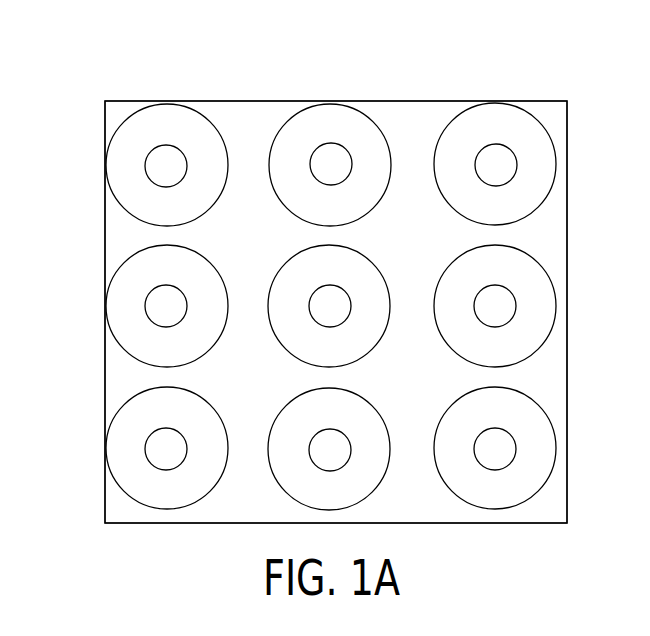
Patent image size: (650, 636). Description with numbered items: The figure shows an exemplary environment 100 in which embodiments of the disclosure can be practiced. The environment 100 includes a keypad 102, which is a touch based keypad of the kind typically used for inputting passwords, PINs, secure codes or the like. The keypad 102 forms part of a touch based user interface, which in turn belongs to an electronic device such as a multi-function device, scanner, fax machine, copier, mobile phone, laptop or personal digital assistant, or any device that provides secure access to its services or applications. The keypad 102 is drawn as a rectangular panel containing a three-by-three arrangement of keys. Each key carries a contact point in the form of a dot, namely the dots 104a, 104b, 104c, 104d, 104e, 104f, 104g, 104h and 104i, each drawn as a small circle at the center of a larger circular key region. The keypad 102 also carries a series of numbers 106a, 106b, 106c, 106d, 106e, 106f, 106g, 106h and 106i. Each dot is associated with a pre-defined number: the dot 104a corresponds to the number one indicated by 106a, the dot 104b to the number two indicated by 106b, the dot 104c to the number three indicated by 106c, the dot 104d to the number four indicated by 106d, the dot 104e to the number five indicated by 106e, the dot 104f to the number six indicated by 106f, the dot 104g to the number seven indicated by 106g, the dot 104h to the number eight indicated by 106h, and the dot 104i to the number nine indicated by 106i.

The environment 100 is at (85, 522).
The keypad 102 is at (401, 98).
The dot 104a is at (152, 163).
The dot 104b is at (335, 160).
The dot 104c is at (500, 163).
The dot 104d is at (155, 302).
The dot 104e is at (330, 318).
The dot 104f is at (492, 320).
The dot 104g is at (155, 443).
The dot 104h is at (330, 462).
The dot 104i is at (488, 462).
The number 106a is at (140, 122).
The number 106b is at (298, 123).
The number 106c is at (465, 122).
The number 106d is at (145, 280).
The number 106e is at (285, 285).
The number 106f is at (523, 267).
The number 106g is at (145, 420).
The number 106h is at (285, 428).
The number 106i is at (522, 410).